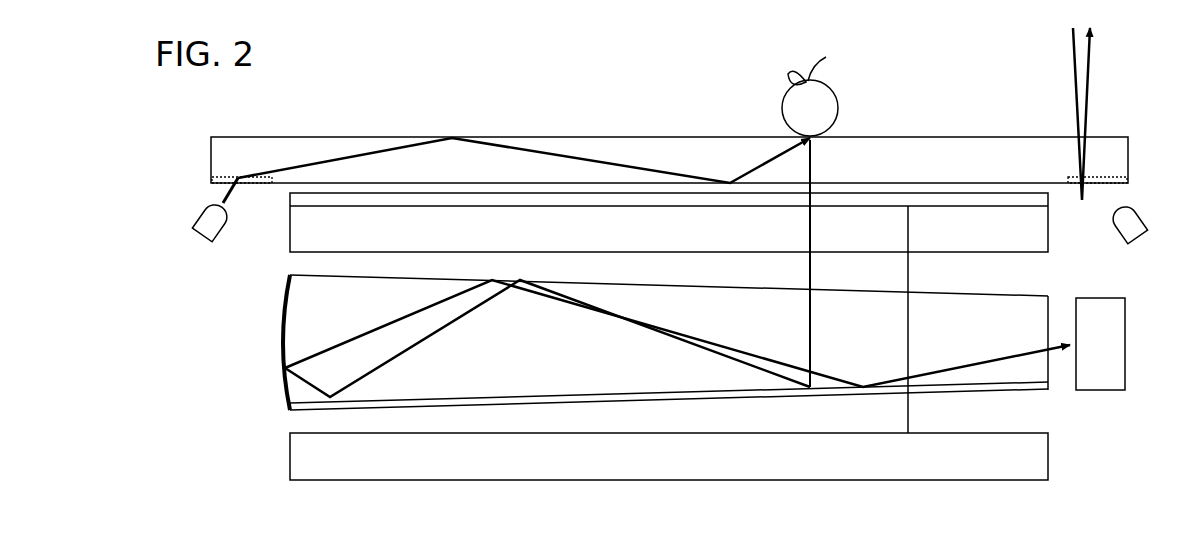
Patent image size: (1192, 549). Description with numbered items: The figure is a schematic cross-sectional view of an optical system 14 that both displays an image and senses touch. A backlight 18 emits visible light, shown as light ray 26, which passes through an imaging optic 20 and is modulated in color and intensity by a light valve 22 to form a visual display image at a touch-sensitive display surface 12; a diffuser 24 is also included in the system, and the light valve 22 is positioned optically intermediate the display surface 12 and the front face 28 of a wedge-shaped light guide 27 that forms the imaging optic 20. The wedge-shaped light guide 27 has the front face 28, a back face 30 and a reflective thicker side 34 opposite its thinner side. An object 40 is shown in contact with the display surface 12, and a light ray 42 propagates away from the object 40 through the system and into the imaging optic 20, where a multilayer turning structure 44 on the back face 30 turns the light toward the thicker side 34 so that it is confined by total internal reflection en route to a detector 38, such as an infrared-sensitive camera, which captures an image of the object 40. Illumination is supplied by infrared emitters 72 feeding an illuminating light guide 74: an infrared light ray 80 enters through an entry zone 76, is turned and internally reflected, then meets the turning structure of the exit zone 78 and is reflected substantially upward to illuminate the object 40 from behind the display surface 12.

The touch-sensitive display surface 12 is at (305, 135).
The optical system 14 is at (670, 114).
The backlight 18 is at (669, 456).
The imaging optic 20 is at (647, 338).
The light valve 22 is at (669, 222).
The diffuser 24 is at (337, 208).
The light ray 26 is at (938, 200).
The wedge-shaped light guide 27 is at (670, 338).
The front face 28 is at (1035, 292).
The back face 30 is at (1035, 393).
The thicker side 34 is at (240, 273).
The detector 38 is at (1100, 344).
The object 40 is at (810, 96).
The light ray 42 is at (808, 212).
The multilayer turning structure 44 is at (457, 398).
The infrared emitters 72 is at (198, 219).
The illuminating light guide 74 is at (385, 55).
The entry zone 76 is at (222, 172).
The exit zone 78 is at (518, 190).
The infrared light ray 80 is at (232, 193).